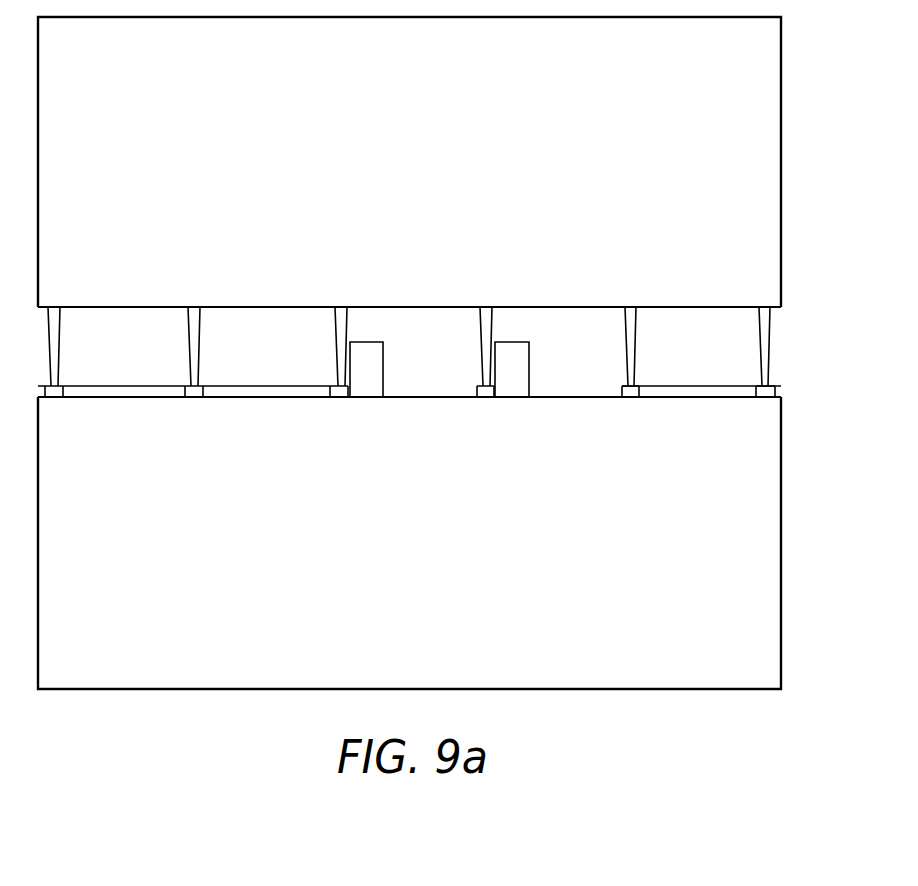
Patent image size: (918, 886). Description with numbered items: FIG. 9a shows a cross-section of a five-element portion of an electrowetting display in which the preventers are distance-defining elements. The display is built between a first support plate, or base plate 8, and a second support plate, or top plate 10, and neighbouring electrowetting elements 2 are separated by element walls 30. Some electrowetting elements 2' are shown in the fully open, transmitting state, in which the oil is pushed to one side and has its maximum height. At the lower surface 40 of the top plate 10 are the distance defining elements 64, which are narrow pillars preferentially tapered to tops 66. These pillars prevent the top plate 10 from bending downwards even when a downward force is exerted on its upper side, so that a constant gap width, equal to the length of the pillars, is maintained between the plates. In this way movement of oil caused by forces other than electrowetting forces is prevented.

The second support plate 10 is at (770, 168).
The first support plate 8 is at (769, 549).
The element walls 30 is at (345, 391).
The distance defining elements 64 is at (630, 346).
The tops 66 is at (627, 382).
The lower surface 40 is at (95, 306).
The electrowetting elements 2 is at (240, 329).
The element in fully open state 2' is at (478, 390).